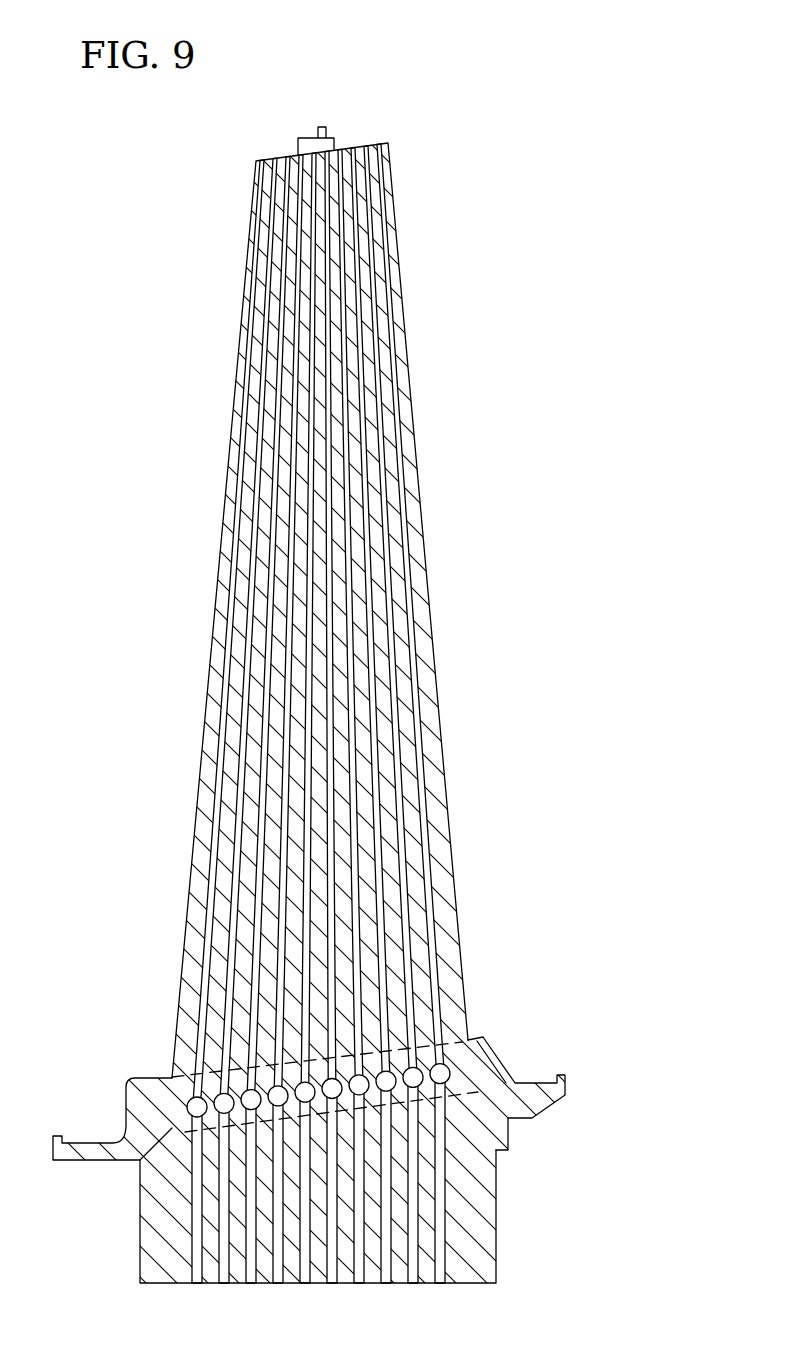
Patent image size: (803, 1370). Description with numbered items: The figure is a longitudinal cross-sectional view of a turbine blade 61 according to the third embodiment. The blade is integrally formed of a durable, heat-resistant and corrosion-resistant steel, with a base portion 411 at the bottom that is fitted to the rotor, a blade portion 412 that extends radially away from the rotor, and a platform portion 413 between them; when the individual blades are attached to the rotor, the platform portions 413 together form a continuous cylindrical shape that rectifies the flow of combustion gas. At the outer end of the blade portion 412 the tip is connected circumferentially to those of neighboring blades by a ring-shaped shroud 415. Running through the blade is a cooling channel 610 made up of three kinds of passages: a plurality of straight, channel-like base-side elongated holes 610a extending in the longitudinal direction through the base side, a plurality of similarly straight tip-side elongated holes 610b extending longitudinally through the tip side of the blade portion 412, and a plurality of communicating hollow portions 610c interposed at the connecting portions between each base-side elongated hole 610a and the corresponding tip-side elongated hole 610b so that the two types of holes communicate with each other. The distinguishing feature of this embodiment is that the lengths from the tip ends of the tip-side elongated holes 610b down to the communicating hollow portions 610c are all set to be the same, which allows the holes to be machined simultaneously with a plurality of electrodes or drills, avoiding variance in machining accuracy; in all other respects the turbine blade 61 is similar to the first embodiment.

The turbine blade 61 is at (171, 160).
The shroud 415 is at (311, 137).
The blade portion 412 is at (216, 578).
The platform portion 413 is at (512, 1063).
The base portion 411 is at (140, 1197).
The cooling channel 610 is at (456, 713).
The base-side elongated hole 610a is at (387, 1230).
The tip-side elongated hole 610b is at (380, 845).
The communicating hollow portion 610c is at (390, 1070).